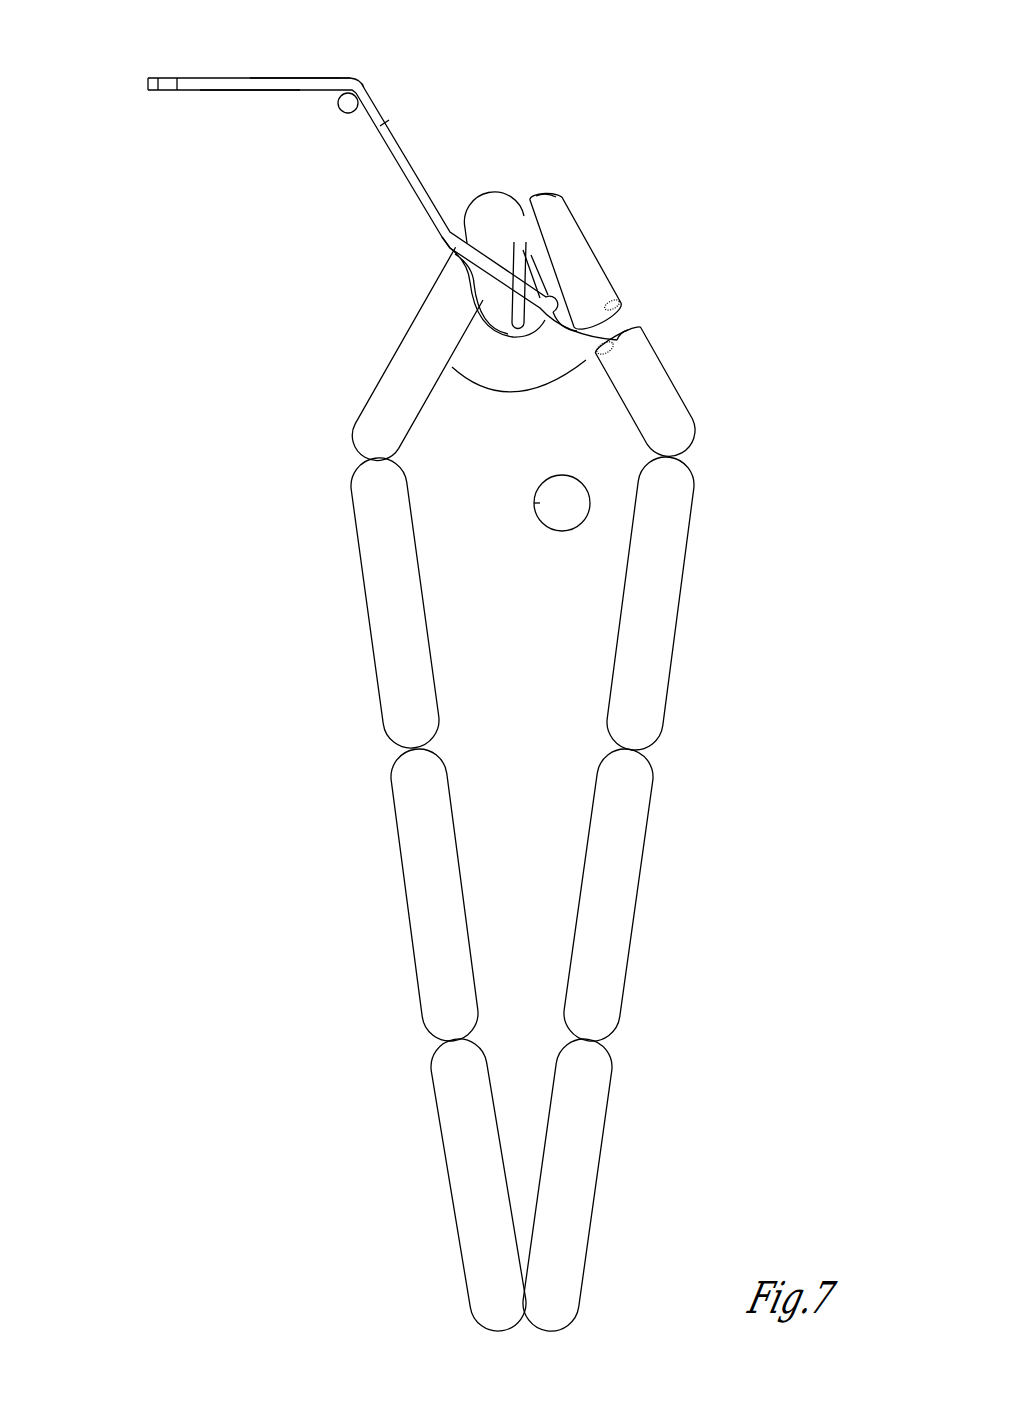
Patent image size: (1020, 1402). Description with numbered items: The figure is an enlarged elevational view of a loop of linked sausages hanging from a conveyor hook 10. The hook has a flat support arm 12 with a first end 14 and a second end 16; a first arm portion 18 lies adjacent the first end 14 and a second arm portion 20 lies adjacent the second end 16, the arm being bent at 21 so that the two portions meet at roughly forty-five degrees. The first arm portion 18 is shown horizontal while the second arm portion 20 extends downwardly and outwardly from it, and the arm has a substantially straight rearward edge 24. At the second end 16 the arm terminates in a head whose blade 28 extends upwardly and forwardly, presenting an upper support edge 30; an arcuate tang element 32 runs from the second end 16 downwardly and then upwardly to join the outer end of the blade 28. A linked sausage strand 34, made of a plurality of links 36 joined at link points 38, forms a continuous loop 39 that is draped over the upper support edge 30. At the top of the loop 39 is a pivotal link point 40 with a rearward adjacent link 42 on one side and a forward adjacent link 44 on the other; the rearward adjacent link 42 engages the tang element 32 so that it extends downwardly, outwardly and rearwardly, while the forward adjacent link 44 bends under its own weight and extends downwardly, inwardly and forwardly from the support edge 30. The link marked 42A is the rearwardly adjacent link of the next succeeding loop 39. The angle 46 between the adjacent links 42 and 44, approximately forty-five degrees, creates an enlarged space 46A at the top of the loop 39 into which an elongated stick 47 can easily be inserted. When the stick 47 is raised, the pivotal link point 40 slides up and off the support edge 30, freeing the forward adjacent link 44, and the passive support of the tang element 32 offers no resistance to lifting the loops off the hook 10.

The conveyor hook 10 is at (373, 57).
The support arm 12 is at (281, 73).
The first end 14 is at (150, 78).
The second end 16 is at (450, 247).
The first arm portion 18 is at (198, 78).
The second arm portion 20 is at (400, 142).
The bend 21 is at (365, 87).
The rearward edge 24 is at (258, 83).
The blade 28 is at (512, 257).
The upper support edge 30 is at (510, 262).
The tang element 32 is at (570, 330).
The linked sausage strand 34 is at (680, 311).
The link 36 is at (382, 540).
The link point 38 is at (665, 456).
The loop 39 is at (653, 835).
The pivotal link point 40 is at (524, 235).
The rearward adjacent link 42 is at (573, 250).
The rearwardly adjacent link of next succeeding loop 42A is at (650, 395).
The forward adjacent link 44 is at (383, 357).
The angle 46 is at (510, 395).
The space 46A is at (496, 517).
The elongated stick 47 is at (562, 507).